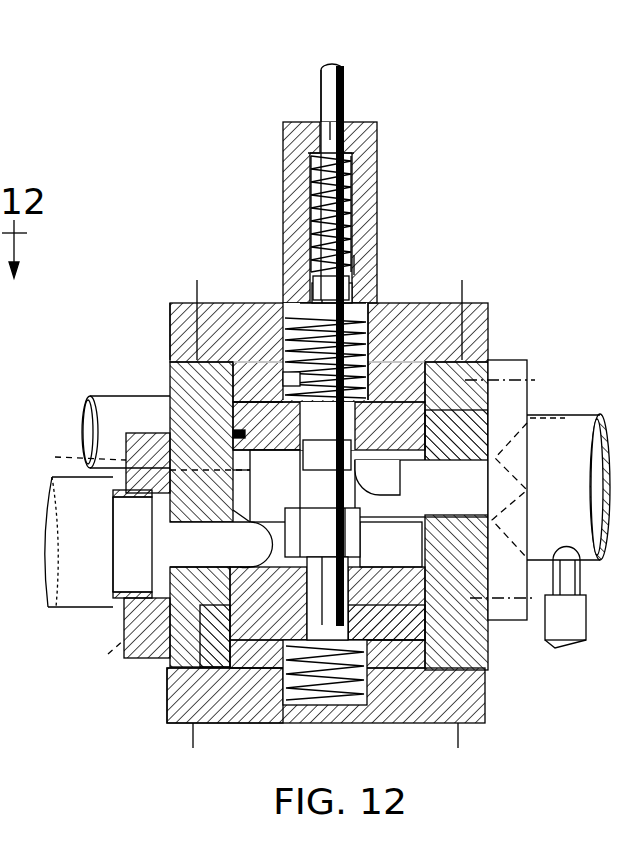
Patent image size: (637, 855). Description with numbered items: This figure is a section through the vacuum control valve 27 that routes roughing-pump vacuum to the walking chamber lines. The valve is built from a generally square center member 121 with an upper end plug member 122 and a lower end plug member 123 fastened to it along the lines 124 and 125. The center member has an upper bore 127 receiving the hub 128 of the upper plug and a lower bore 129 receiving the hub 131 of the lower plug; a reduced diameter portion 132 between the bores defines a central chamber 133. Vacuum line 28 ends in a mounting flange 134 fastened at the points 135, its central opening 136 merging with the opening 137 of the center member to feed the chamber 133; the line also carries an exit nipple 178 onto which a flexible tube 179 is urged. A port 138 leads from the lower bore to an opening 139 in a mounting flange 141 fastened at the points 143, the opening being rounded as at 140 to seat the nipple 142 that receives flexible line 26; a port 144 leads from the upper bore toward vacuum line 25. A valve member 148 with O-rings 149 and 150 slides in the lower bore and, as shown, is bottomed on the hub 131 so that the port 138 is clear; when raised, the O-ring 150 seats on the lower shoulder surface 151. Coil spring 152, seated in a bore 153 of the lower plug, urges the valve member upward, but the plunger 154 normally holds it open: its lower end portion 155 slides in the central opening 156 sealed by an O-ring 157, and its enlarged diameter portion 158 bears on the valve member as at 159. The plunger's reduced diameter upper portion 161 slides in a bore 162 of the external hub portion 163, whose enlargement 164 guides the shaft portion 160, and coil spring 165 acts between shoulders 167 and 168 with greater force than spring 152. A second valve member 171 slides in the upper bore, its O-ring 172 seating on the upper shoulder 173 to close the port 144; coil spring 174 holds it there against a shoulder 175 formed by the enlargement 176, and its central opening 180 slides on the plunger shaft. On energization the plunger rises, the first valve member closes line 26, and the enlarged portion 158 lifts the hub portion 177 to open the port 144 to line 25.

The vacuum line 25 is at (108, 396).
The flexible line 26 is at (60, 600).
The vacuum control valve 27 is at (164, 320).
The vacuum line 28 is at (565, 420).
The center member 121 is at (170, 375).
The upper end plug member 122 is at (488, 316).
The lower end plug member 123 is at (167, 688).
The fastener line 124 is at (197, 292).
The fastener line 125 is at (193, 740).
The upper bore 127 is at (412, 418).
The hub 128 is at (418, 393).
The lower bore 129 is at (232, 660).
The hub 131 is at (456, 592).
The reduced diameter portion 132 is at (240, 492).
The central chamber 133 is at (245, 514).
The mounting flange 134 is at (520, 360).
The fastener points 135 is at (532, 381).
The central opening 136 is at (506, 486).
The opening 137 is at (415, 512).
The port 138 is at (176, 572).
The opening 139 is at (132, 548).
The enlarged rounded portion 140 is at (118, 518).
The mounting flange 141 is at (165, 436).
The nipple 142 is at (124, 618).
The fastener points 143 is at (73, 552).
The port 144 is at (368, 396).
The valve member 148 is at (268, 603).
The O-ring 149 is at (225, 628).
The O-ring 150 is at (238, 570).
The lower shoulder surface 151 is at (238, 545).
The coil spring 152 is at (225, 695).
The bore 153 is at (372, 690).
The plunger 154 is at (350, 66).
The lower end portion 155 is at (348, 590).
The central opening 156 is at (348, 618).
The O-ring 157 is at (356, 292).
The enlarged diameter portion 158 is at (338, 544).
The engagement point 159 is at (360, 543).
The shaft portion 160 is at (313, 285).
The reduced diameter upper portion 161 is at (344, 100).
The bore 162 is at (322, 118).
The external hub portion 163 is at (368, 170).
The enlargement 164 is at (311, 200).
The coil spring 165 is at (311, 232).
The shoulder 167 is at (292, 172).
The shoulder 168 is at (356, 266).
The second valve member 171 is at (236, 420).
The O-ring 172 is at (236, 444).
The upper shoulder 173 is at (245, 462).
The coil spring 174 is at (368, 340).
The shoulder 175 is at (300, 310).
The enlargement 176 is at (283, 340).
The hub portion 177 is at (380, 478).
The exit nipple 178 is at (580, 588).
The flexible tube 179 is at (584, 640).
The central opening 180 is at (327, 455).